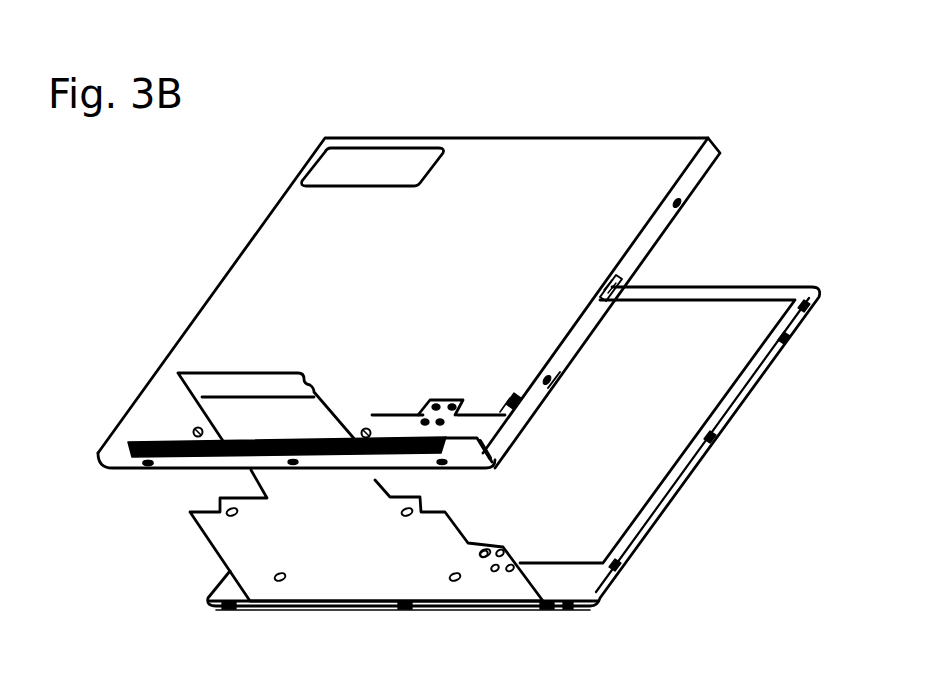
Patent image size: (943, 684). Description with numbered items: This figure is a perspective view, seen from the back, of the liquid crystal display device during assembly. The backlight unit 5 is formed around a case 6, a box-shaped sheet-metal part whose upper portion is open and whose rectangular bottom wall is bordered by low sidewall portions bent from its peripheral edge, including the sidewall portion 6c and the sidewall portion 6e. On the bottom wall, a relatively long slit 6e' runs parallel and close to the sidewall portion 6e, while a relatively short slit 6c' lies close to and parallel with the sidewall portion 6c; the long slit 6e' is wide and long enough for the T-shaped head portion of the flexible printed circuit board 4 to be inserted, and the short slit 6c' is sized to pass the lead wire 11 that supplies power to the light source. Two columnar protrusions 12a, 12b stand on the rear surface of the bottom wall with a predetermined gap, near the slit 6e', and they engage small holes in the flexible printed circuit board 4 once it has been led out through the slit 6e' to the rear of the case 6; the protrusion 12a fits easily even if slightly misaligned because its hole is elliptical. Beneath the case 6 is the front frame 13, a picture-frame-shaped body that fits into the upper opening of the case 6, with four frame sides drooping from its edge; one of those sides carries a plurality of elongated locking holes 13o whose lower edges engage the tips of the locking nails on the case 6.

The backlight unit 5 is at (481, 129).
The case 6 is at (283, 258).
The sidewall portion 6c is at (586, 364).
The slit 6c' is at (547, 412).
The sidewall portion 6e is at (287, 491).
The slit 6e' is at (124, 482).
The lead wire 11 is at (497, 430).
The columnar protrusion 12a is at (195, 430).
The columnar protrusion 12b is at (367, 429).
The flexible printed circuit board 4 is at (347, 565).
The front frame 13 is at (673, 499).
The locking holes 13o is at (254, 612).